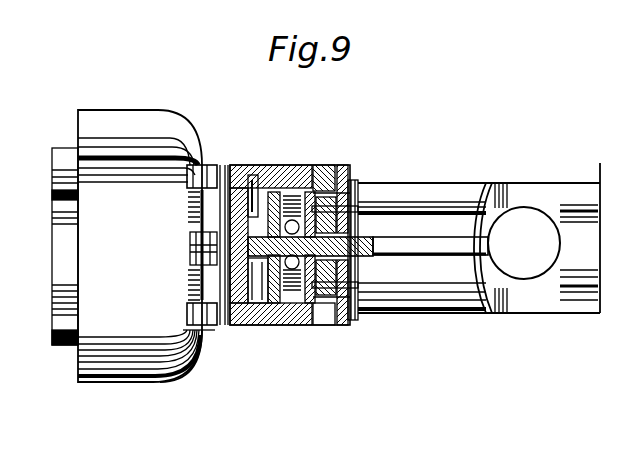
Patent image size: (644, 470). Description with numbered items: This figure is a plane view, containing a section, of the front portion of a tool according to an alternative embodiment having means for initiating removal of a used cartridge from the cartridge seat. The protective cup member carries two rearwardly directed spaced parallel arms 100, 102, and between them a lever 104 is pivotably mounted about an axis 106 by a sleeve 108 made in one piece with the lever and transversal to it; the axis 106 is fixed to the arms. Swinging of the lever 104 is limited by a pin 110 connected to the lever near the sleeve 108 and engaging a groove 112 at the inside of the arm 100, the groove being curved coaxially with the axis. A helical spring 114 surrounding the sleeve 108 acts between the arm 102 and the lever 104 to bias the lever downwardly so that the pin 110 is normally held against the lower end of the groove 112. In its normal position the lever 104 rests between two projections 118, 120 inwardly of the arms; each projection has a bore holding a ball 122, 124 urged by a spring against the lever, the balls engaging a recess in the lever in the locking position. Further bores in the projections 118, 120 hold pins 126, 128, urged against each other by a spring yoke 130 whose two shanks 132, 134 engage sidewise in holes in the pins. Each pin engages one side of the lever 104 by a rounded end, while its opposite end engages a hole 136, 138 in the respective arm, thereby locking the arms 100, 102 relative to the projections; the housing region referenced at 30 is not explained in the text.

The housing 30 is at (178, 364).
The arm 100 is at (222, 165).
The arm 102 is at (270, 322).
The lever 104 is at (448, 194).
The axis 106 is at (231, 302).
The sleeve 108 is at (203, 163).
The pin 110 is at (262, 165).
The groove 112 is at (238, 180).
The helical spring 114 is at (214, 302).
The projection 118 is at (300, 190).
The projection 120 is at (313, 322).
The ball 122 is at (302, 165).
The ball 124 is at (284, 322).
The pin 126 is at (346, 192).
The pin 128 is at (360, 320).
The spring yoke 130 is at (430, 242).
The shank 132 is at (357, 222).
The shank 134 is at (395, 313).
The hole 136 is at (336, 165).
The hole 138 is at (339, 322).